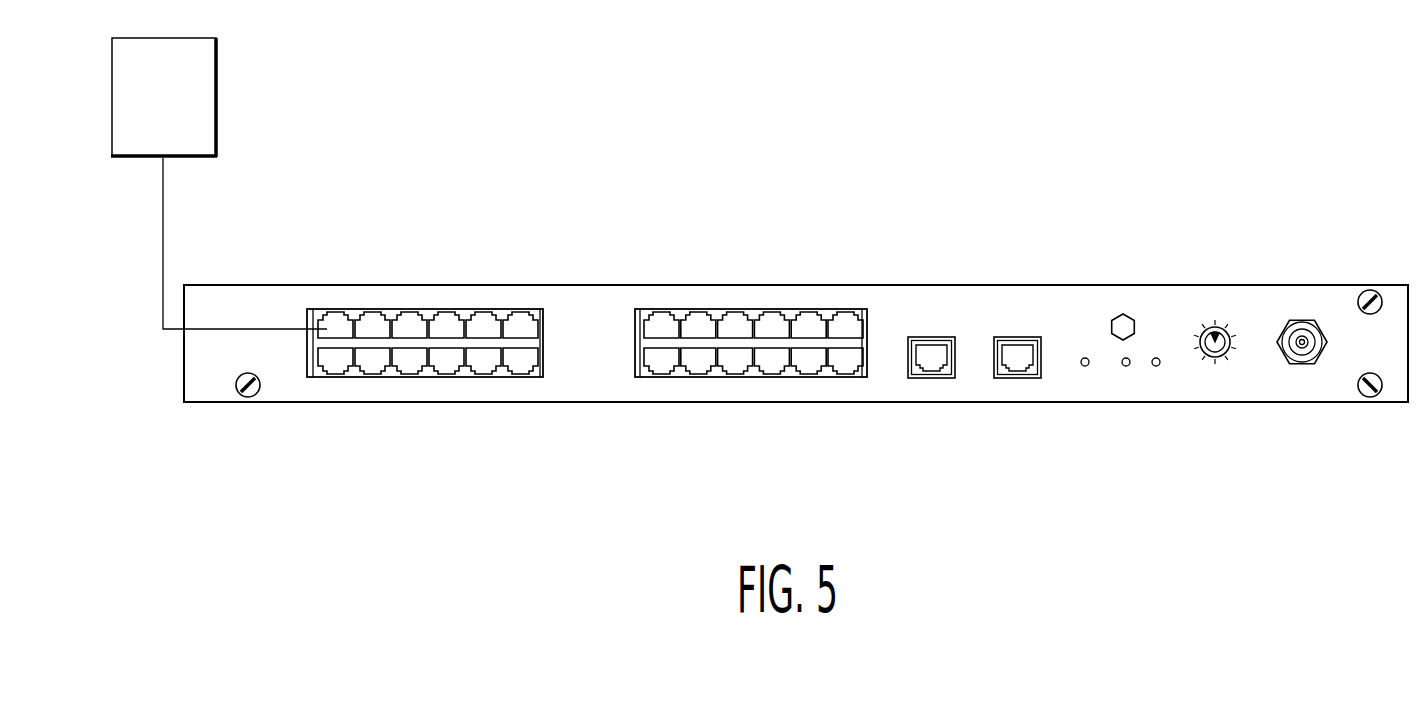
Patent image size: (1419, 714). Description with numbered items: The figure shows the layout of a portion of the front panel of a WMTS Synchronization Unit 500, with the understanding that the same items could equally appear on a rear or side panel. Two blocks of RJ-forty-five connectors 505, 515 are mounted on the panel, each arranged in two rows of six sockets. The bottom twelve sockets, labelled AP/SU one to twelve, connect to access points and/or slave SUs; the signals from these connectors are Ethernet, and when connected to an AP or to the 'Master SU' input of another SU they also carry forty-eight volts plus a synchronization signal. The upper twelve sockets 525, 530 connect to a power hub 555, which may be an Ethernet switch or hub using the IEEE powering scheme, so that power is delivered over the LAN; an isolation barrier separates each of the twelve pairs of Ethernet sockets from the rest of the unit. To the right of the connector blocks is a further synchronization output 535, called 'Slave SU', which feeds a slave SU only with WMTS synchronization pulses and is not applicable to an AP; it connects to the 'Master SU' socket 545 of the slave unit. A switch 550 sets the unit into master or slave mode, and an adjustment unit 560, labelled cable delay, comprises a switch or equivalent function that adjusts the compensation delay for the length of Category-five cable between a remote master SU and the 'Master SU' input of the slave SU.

The hub front panel 500 is at (435, 286).
The block of RJ-45 connectors 505 is at (308, 377).
The block of RJ-45 connectors 515 is at (860, 377).
The upper sockets 525 is at (320, 309).
The upper sockets 530 is at (864, 310).
The synchronization output 535 is at (948, 378).
The 'Master SU' socket 545 is at (1042, 348).
The switch 550 is at (1123, 314).
The power hub 555 is at (217, 93).
The adjustment unit 560 is at (1205, 328).